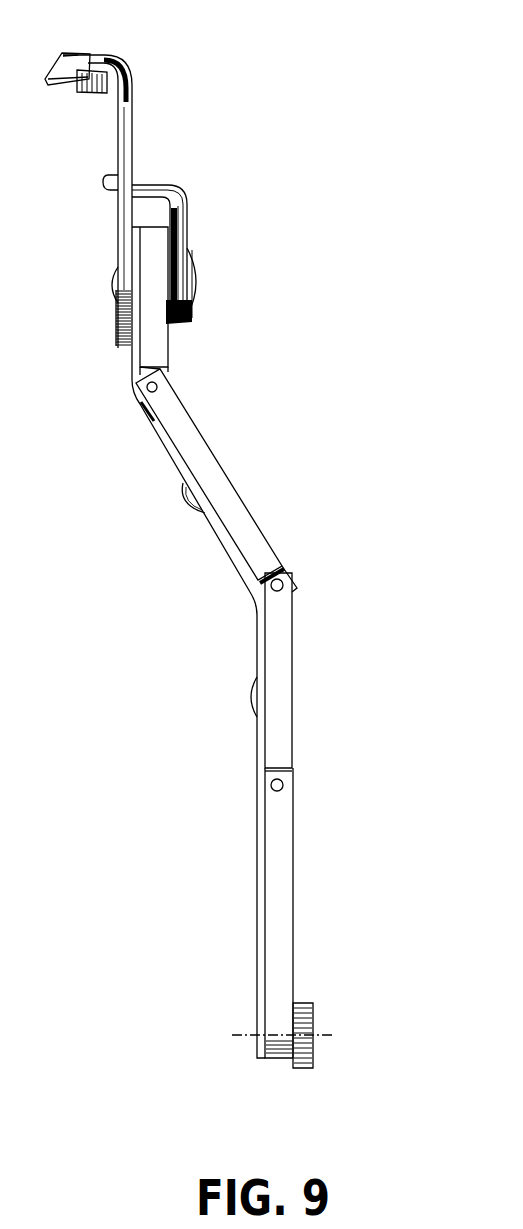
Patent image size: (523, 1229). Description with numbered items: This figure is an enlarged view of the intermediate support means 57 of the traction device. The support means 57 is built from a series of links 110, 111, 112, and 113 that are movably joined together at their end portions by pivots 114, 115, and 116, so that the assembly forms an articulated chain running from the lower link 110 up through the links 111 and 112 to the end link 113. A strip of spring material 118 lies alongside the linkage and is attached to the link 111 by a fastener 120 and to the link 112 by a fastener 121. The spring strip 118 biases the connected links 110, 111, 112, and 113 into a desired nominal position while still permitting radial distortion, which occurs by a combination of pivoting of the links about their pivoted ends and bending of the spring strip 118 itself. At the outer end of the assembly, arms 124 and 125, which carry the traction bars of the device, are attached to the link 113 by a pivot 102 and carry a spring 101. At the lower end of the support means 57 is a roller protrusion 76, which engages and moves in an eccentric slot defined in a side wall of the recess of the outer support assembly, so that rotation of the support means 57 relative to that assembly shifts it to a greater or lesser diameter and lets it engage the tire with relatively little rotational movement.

The arm 124 is at (77, 60).
The arm 125 is at (128, 112).
The spring 101 is at (180, 203).
The pivot 102 is at (197, 285).
The link 113 is at (158, 355).
The pivot 116 is at (166, 383).
The link 112 is at (205, 457).
The intermediate support means 57 is at (282, 527).
The fastener 121 is at (193, 507).
The strip of spring material 118 is at (222, 537).
The pivot 115 is at (283, 594).
The link 111 is at (283, 685).
The fastener 120 is at (248, 702).
The pivot 114 is at (282, 790).
The link 110 is at (282, 895).
The roller protrusion 76 is at (305, 1028).